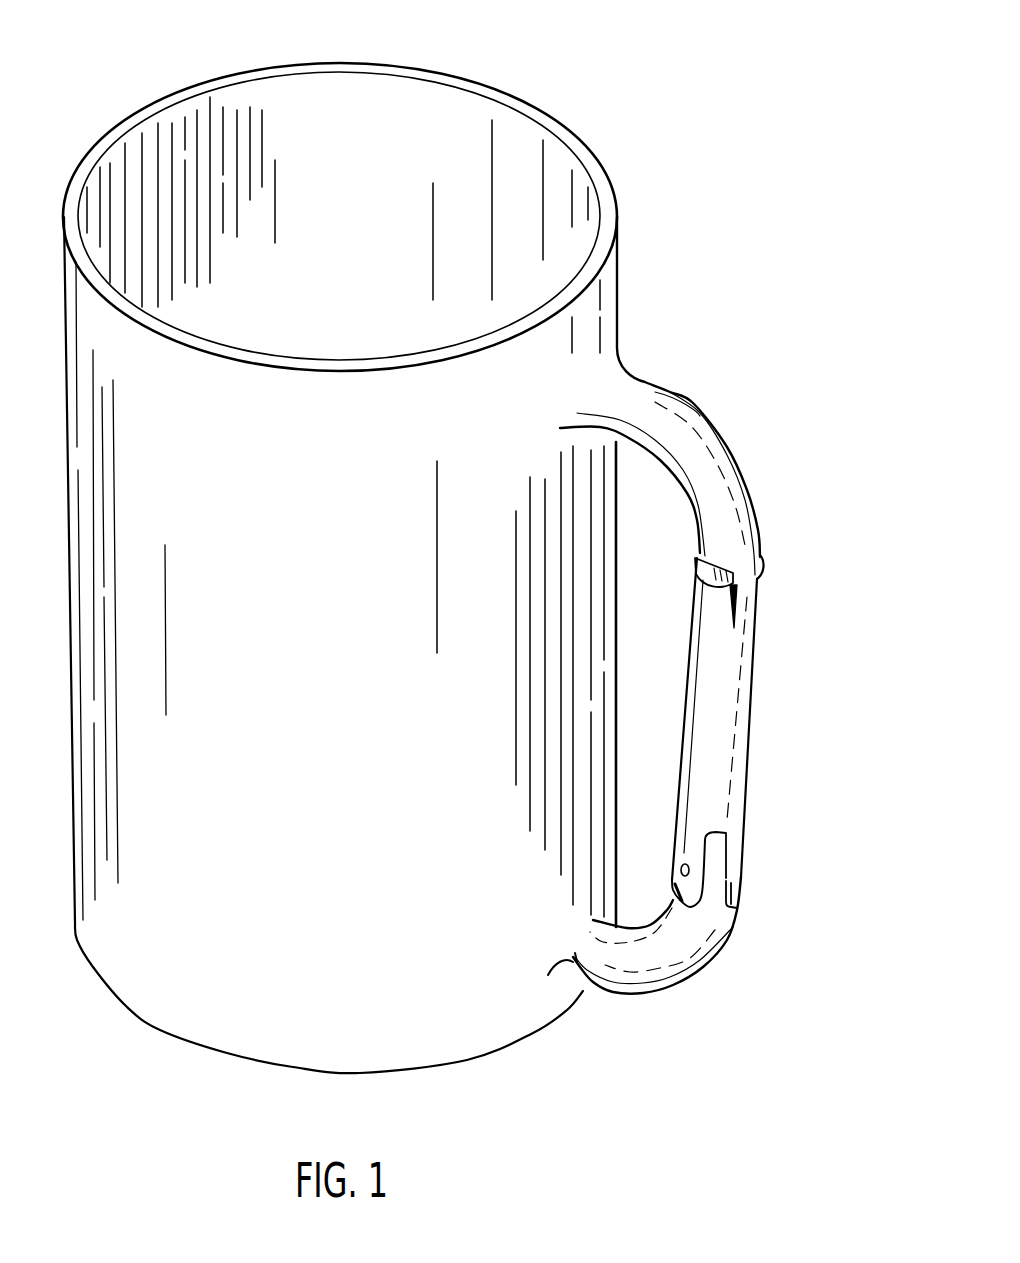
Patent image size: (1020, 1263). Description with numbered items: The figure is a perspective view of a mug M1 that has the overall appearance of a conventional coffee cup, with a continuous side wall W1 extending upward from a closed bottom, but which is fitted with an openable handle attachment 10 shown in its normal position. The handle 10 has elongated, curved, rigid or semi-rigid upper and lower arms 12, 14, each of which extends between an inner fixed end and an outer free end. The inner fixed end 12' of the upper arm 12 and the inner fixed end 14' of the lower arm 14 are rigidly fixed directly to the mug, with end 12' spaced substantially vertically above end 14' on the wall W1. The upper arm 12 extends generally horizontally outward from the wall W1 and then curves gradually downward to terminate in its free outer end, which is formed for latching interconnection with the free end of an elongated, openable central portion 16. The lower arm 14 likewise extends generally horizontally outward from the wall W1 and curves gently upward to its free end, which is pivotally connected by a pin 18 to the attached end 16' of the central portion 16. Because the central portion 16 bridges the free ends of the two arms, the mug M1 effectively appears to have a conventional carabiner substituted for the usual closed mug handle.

The openable handle attachment 10 is at (485, 563).
The upper arm 12 is at (685, 396).
The inner fixed end of upper arm 12' is at (686, 322).
The lower arm 14 is at (683, 959).
The inner fixed end of lower arm 14' is at (589, 1029).
The openable central portion 16 is at (785, 719).
The attached end of central portion 16' is at (787, 847).
The pin 18 is at (690, 869).
The mug M1 is at (337, 547).
The side wall W1 is at (306, 580).